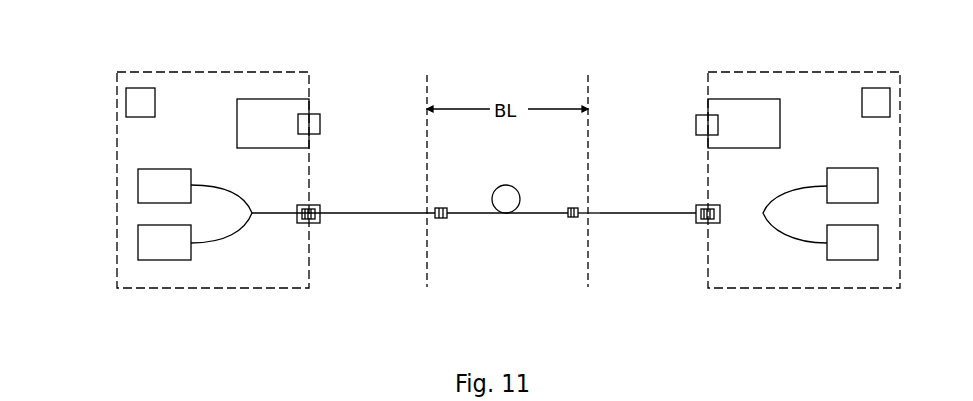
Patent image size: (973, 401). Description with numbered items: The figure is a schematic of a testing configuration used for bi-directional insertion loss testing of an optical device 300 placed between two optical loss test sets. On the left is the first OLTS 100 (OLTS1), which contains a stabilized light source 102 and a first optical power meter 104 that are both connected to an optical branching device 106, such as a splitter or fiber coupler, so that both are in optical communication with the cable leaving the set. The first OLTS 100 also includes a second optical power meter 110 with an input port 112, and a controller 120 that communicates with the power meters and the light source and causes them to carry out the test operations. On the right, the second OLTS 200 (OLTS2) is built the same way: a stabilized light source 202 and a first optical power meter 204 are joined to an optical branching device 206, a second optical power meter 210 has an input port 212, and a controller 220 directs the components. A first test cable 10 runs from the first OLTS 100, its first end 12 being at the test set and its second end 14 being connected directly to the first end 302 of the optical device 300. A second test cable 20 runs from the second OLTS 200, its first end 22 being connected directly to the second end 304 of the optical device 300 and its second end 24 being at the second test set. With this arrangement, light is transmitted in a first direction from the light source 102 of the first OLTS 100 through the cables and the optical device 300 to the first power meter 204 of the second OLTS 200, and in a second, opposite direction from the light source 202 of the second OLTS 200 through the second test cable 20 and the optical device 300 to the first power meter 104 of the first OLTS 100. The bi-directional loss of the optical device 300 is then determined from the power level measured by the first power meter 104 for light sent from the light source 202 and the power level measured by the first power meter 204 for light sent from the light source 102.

The first OLTS 100 is at (260, 70).
The second OLTS 200 is at (853, 70).
The controller 120 is at (137, 103).
The controller 220 is at (882, 102).
The second optical power meter 110 is at (247, 108).
The second optical power meter 210 is at (768, 120).
The input port 112 is at (313, 123).
The input port 212 is at (702, 122).
The first optical power meter 104 is at (150, 175).
The first optical power meter 204 is at (833, 175).
The stabilized light source 102 is at (153, 243).
The stabilized light source 202 is at (863, 253).
The optical branching device 106 is at (230, 192).
The optical branching device 206 is at (797, 188).
The first test cable 10 is at (367, 212).
The first end of first test cable 12 is at (317, 223).
The second end of first test cable 14 is at (437, 208).
The first end of optical device 302 is at (445, 208).
The optical device 300 is at (512, 185).
The second end of optical device 304 is at (570, 218).
The first end of second test cable 22 is at (575, 208).
The second test cable 20 is at (643, 212).
The second end of second test cable 24 is at (703, 223).